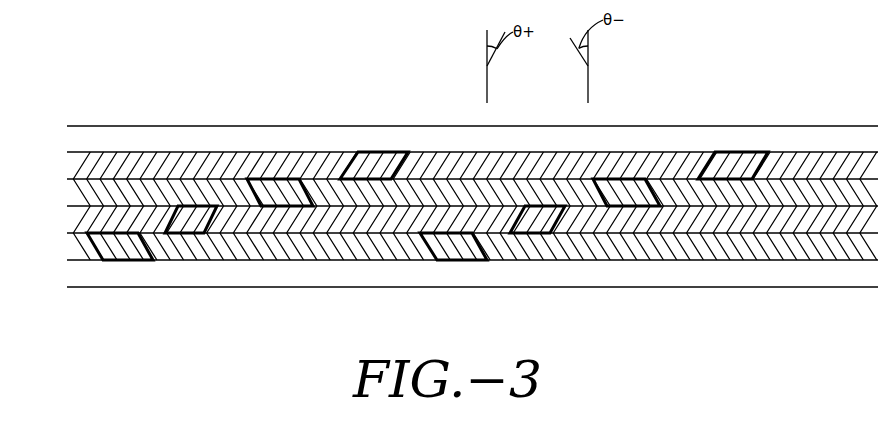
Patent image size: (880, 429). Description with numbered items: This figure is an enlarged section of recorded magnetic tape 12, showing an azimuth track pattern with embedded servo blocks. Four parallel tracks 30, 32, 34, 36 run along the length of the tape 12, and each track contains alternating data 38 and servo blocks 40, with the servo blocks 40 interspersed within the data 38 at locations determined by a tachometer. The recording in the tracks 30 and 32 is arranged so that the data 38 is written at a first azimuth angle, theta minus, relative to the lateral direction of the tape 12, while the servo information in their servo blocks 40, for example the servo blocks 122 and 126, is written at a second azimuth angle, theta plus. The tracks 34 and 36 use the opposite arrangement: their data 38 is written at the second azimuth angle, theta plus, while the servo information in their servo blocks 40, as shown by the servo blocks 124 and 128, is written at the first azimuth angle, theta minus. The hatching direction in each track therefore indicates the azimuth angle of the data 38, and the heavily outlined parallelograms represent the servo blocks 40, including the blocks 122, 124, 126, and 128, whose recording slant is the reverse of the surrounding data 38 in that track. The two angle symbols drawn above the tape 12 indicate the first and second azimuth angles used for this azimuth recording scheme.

The tape 12 is at (715, 125).
The track 30 is at (82, 243).
The track 32 is at (80, 192).
The track 34 is at (80, 217).
The track 36 is at (80, 165).
The data 38 is at (119, 209).
The servo blocks 40 is at (137, 233).
The servo block 122 is at (460, 261).
The servo block 124 is at (533, 234).
The servo block 126 is at (643, 207).
The servo block 128 is at (730, 178).